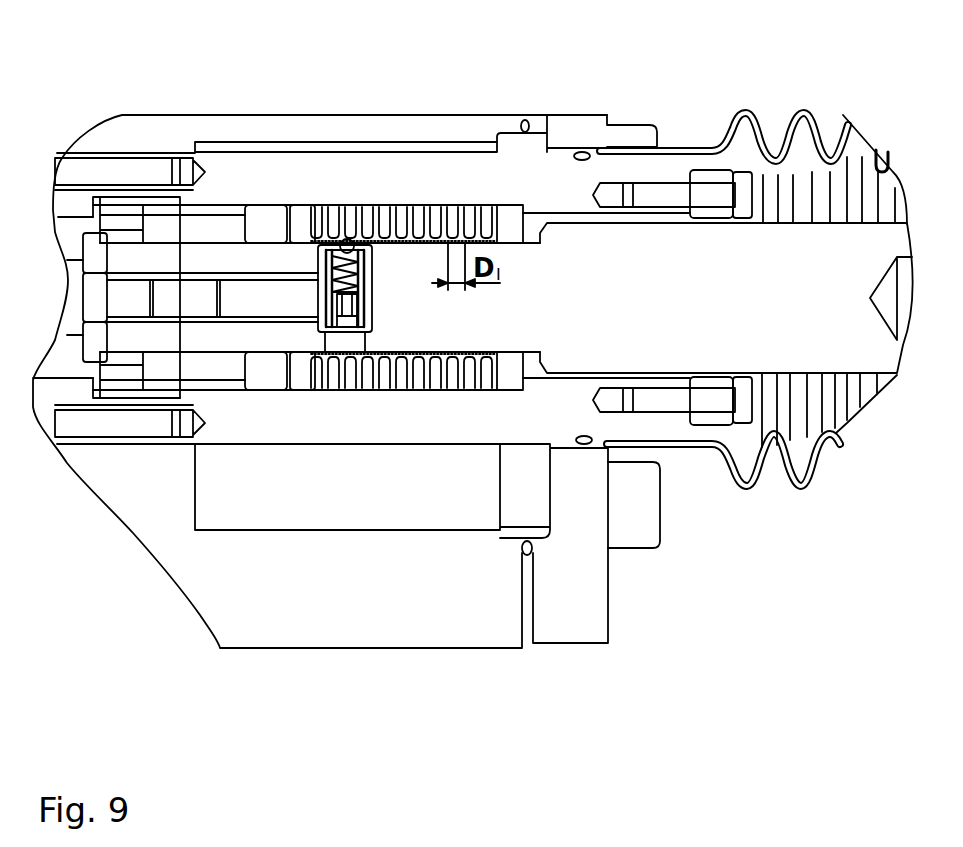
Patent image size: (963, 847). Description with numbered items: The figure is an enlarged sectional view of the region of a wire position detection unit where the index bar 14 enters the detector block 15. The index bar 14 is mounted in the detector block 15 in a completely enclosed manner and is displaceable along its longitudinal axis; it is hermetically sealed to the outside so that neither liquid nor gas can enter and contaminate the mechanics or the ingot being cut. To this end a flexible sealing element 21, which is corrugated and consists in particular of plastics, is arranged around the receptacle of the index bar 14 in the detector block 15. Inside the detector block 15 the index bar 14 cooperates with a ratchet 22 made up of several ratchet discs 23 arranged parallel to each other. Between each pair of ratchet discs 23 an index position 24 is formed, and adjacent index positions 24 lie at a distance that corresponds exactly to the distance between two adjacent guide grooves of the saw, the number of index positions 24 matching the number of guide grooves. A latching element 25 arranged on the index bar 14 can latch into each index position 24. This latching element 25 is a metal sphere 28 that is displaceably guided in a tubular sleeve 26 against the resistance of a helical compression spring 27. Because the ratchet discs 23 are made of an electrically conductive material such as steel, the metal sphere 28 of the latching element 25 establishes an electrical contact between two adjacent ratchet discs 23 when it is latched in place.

The index bar 14 is at (707, 253).
The detector block 15 is at (170, 657).
The sealing element 21 is at (803, 112).
The ratchet 22 is at (455, 196).
The ratchet discs 23 is at (437, 210).
The index position 24 is at (330, 213).
The latching element 25 is at (392, 283).
The tubular sleeve 26 is at (368, 333).
The helical compression spring 27 is at (372, 297).
The metal sphere 28 is at (350, 237).